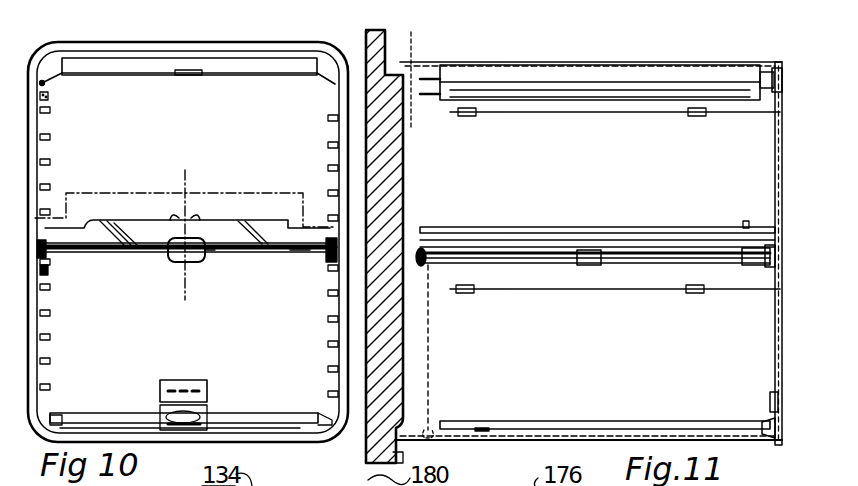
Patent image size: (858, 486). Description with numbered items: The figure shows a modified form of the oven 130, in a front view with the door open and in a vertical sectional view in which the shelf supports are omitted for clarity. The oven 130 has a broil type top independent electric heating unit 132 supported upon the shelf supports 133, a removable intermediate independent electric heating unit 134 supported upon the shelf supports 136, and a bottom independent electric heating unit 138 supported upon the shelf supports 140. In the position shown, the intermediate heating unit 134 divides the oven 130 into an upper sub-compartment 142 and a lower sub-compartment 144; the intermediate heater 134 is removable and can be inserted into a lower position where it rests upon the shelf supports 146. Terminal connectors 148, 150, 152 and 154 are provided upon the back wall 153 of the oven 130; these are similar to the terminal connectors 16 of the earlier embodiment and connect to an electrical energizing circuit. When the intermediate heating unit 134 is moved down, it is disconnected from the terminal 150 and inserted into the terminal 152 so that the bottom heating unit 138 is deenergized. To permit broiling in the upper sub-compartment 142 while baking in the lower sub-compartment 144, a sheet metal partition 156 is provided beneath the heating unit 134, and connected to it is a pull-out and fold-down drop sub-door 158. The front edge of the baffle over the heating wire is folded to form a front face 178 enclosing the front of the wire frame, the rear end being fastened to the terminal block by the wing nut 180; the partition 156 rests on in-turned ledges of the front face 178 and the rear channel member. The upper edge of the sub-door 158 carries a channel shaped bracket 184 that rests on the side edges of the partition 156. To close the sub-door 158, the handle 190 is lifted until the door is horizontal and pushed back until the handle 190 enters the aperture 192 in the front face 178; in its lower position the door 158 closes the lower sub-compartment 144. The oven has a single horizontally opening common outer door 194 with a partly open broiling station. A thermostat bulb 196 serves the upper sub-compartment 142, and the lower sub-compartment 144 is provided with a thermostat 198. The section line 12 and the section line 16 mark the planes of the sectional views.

In FIG. 10, the section line 12- 12 is at (168, 177).
In FIG. 10, the terminal connector 16 is at (17, 240).
In FIG. 10, the oven 130 is at (268, 440).
In FIG. 11, the oven 130 is at (458, 440).
In FIG. 10, the top independent electric heating unit 132 is at (158, 76).
In FIG. 11, the top independent electric heating unit 132 is at (587, 72).
In FIG. 10, the shelf supports 133 is at (44, 84).
In FIG. 10, the intermediate independent electric heating unit 134 is at (190, 225).
In FIG. 11, the intermediate independent electric heating unit 134 is at (617, 230).
In FIG. 10, the shelf supports 136 is at (336, 251).
In FIG. 11, the shelf supports 136 is at (700, 252).
In FIG. 10, the bottom independent electric heating unit 138 is at (230, 413).
In FIG. 11, the bottom independent electric heating unit 138 is at (543, 420).
In FIG. 10, the shelf supports 140 is at (48, 413).
In FIG. 10, the upper sub-compartment 142 is at (179, 127).
In FIG. 11, the upper sub-compartment 142 is at (586, 160).
In FIG. 10, the lower sub-compartment 144 is at (179, 326).
In FIG. 11, the lower sub-compartment 144 is at (597, 346).
In FIG. 10, the shelf supports 146 is at (43, 383).
In FIG. 11, the terminal connector 148 is at (778, 78).
In FIG. 11, the terminal connector 150 is at (775, 232).
In FIG. 10, the terminal connector 152 is at (176, 380).
In FIG. 11, the terminal connector 152 is at (770, 398).
In FIG. 10, the back wall 153 is at (272, 148).
In FIG. 11, the back wall 153 is at (777, 185).
In FIG. 11, the terminal connector 154 is at (768, 425).
In FIG. 11, the sheet metal partition 156 is at (661, 261).
In FIG. 10, the drop sub-door 158 is at (88, 252).
In FIG. 11, the drop sub-door 158 is at (429, 264).
In FIG. 10, the front face 178 is at (300, 251).
In FIG. 10, the wing nut 180 is at (172, 216).
In FIG. 11, the wing nut 180 is at (743, 225).
In FIG. 11, the channel shaped bracket 184 is at (598, 263).
In FIG. 10, the handle 190 is at (170, 262).
In FIG. 11, the handle 190 is at (420, 250).
In FIG. 10, the aperture 192 is at (215, 252).
In FIG. 11, the common outer door 194 is at (405, 177).
In FIG. 10, the thermostat bulb 196 is at (49, 97).
In FIG. 11, the thermostat bulb 196 is at (612, 118).
In FIG. 10, the thermostat 198 is at (47, 276).
In FIG. 11, the thermostat 198 is at (580, 291).